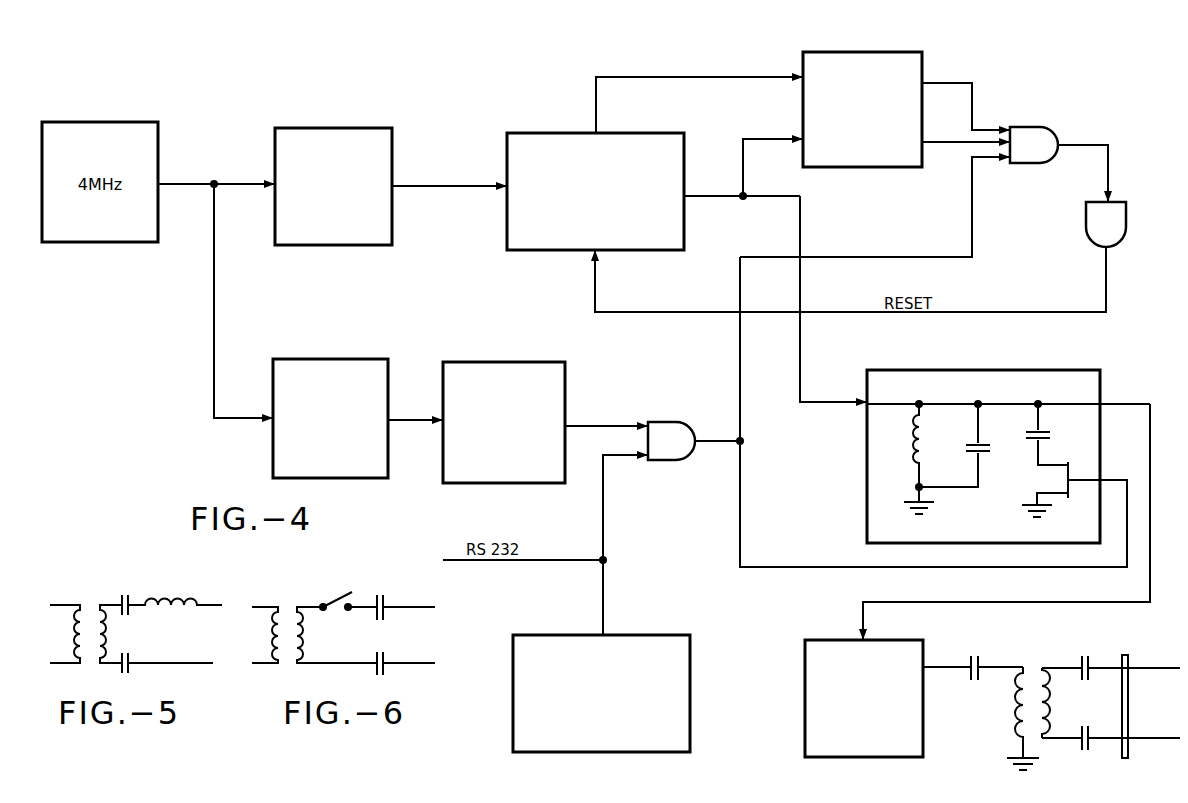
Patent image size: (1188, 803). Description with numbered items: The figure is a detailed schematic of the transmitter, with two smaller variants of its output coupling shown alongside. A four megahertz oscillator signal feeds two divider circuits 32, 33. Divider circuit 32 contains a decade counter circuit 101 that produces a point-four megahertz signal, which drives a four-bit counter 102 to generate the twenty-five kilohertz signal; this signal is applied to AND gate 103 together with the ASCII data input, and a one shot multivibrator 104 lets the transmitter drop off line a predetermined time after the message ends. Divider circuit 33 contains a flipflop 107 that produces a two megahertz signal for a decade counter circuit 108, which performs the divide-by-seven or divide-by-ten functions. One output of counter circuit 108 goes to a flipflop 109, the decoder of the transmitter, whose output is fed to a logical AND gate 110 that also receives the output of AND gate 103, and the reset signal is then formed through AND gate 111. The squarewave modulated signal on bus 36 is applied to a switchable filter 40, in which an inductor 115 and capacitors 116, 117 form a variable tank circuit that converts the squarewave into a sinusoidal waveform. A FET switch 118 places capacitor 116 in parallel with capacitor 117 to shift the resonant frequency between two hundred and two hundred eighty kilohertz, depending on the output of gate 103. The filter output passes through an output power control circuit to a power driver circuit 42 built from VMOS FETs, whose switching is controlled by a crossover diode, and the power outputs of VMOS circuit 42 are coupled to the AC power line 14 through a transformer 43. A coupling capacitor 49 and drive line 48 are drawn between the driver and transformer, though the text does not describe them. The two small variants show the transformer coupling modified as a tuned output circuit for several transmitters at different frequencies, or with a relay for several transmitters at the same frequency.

The AC power line 14 is at (1128, 655).
The divider circuit 32 is at (273, 453).
The divider circuit 33 is at (274, 136).
The bus 36 is at (800, 216).
The switchable filter 40 is at (1008, 444).
The power driver circuit 42 is at (805, 688).
The transformer 43 is at (1034, 655).
The drive signal line 48 is at (952, 602).
The coupling capacitor 49 is at (948, 668).
The decade counter circuit 101 is at (332, 368).
The 4-bit counter 102 is at (500, 376).
The AND gate 103 is at (678, 428).
The one shot multivibrator 104 is at (630, 644).
The flipflop 107 is at (380, 134).
The decade counter circuit 108 is at (538, 140).
The flipflop 109 is at (913, 80).
The logical AND gate 110 is at (1039, 137).
The AND gate 111 is at (1122, 218).
The inductor 115 is at (905, 437).
The capacitor 116 is at (985, 452).
The capacitor 117 is at (1044, 436).
The FET switch 118 is at (1073, 492).